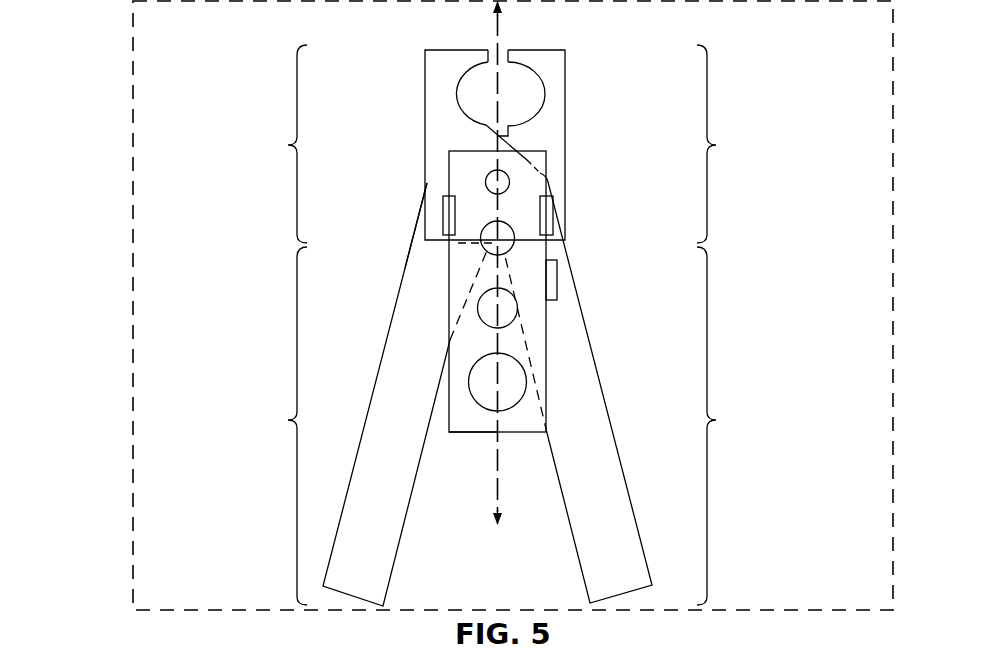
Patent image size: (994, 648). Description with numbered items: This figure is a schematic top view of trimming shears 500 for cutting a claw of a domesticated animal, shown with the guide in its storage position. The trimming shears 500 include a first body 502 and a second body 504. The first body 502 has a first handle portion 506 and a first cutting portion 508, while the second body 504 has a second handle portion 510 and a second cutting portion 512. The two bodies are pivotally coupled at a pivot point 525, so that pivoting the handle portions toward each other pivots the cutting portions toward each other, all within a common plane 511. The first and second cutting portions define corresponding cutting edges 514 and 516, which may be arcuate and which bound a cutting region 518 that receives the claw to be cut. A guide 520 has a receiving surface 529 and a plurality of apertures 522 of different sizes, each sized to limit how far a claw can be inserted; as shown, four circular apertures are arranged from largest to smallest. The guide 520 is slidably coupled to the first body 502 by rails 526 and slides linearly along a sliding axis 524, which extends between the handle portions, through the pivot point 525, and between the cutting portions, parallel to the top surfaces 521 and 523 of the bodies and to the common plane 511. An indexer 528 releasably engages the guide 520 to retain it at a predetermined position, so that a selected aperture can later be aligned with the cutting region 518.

The trimming shears 500 is at (232, 62).
The first body 502 is at (589, 353).
The second body 504 is at (409, 347).
The first handle portion 506 is at (716, 420).
The first cutting portion 508 is at (717, 146).
The second handle portion 510 is at (287, 420).
The common plane 511 is at (132, 205).
The second cutting portion 512 is at (290, 142).
The first cutting edge 514 is at (502, 126).
The second cutting edge 516 is at (460, 92).
The cutting region 518 is at (512, 66).
The guide 520 is at (489, 318).
The top surface of first body 521 is at (569, 240).
The apertures 522 is at (515, 412).
The top surface of second body 523 is at (405, 257).
The sliding axis 524 is at (493, 28).
The pivot point 525 is at (497, 192).
The rails 526 is at (445, 205).
The indexer 528 is at (557, 275).
The receiving surface 529 is at (538, 322).